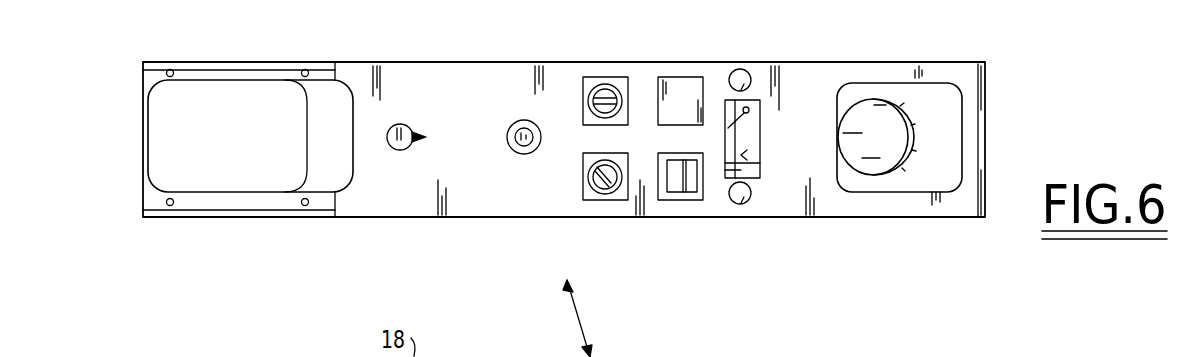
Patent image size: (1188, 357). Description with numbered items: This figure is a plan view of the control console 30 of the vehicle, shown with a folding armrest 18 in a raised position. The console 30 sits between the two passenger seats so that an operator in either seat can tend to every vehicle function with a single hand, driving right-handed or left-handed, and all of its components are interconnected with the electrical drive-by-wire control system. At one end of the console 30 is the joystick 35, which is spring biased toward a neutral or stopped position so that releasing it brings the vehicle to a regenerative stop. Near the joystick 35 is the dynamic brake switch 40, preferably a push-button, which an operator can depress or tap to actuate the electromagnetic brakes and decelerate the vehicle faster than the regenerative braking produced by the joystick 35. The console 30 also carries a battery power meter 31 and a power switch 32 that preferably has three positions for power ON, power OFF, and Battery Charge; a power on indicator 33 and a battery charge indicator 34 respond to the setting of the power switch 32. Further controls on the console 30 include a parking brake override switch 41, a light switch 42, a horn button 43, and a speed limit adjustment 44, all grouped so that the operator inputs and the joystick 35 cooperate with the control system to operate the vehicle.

The folding armrest 18 is at (240, 87).
The control console 30 is at (1003, 83).
The battery power meter 31 is at (761, 134).
The power switch 32 is at (610, 80).
The power on indicator 33 is at (734, 69).
The battery charge indicator 34 is at (750, 200).
The joystick 35 is at (875, 100).
The dynamic brake switch 40 is at (680, 80).
The parking brake override switch 41 is at (683, 196).
The light switch 42 is at (618, 194).
The horn button 43 is at (522, 152).
The speed limit adjustment 44 is at (410, 147).